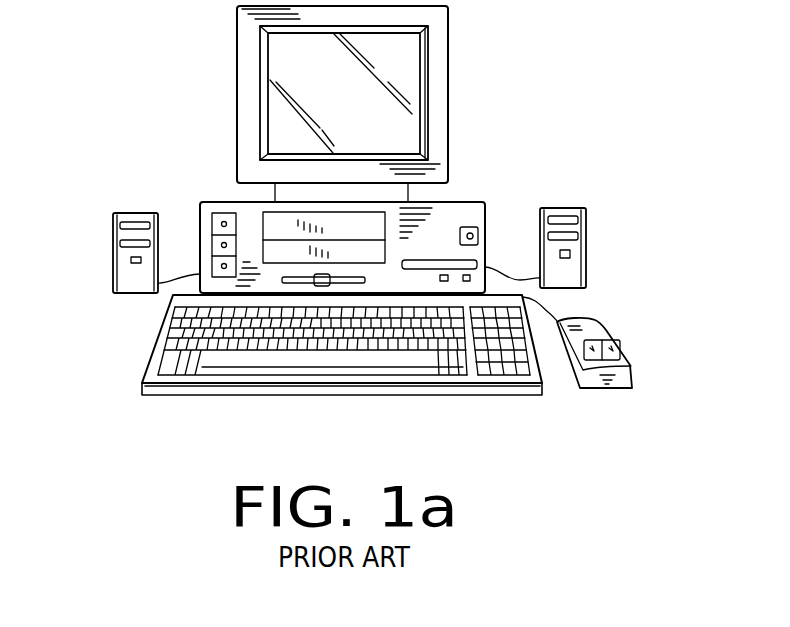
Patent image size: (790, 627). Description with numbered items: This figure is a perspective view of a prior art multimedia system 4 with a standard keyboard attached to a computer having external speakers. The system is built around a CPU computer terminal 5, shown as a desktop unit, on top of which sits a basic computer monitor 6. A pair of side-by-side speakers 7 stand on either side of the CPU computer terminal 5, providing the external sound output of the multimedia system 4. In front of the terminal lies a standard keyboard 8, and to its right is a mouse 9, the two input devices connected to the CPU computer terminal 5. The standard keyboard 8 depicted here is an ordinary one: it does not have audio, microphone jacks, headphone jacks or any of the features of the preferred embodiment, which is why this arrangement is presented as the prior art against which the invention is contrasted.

The multimedia system 4 is at (458, 75).
The CPU computer terminal 5 is at (200, 203).
The computer monitor 6 is at (448, 151).
The speakers 7 is at (572, 208).
The standard keyboard 8 is at (146, 372).
The mouse 9 is at (628, 355).